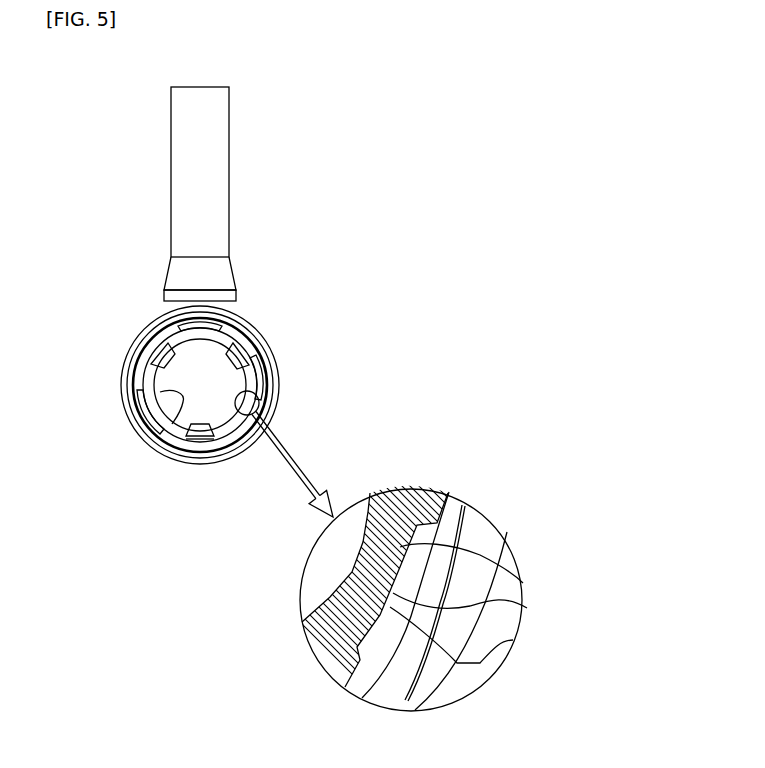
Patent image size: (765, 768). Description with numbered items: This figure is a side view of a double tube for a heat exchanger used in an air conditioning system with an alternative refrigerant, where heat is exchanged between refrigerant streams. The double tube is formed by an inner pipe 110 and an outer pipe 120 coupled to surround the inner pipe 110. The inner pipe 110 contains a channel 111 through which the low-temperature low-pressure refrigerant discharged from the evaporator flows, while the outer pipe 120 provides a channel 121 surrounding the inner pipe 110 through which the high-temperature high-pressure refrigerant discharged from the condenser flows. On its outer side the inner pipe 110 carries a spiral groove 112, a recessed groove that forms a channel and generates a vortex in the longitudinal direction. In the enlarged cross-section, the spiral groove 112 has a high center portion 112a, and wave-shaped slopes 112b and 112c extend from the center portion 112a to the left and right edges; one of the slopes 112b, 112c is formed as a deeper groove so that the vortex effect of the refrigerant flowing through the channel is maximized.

The inner pipe 110 is at (263, 373).
The channel 111 is at (182, 393).
The spiral groove 112 is at (262, 425).
The center portion 112a is at (527, 608).
The wave-shaped slope 112b is at (513, 640).
The wave-shaped slope 112c is at (523, 583).
The outer pipe 120 is at (268, 335).
The channel 121 is at (230, 322).